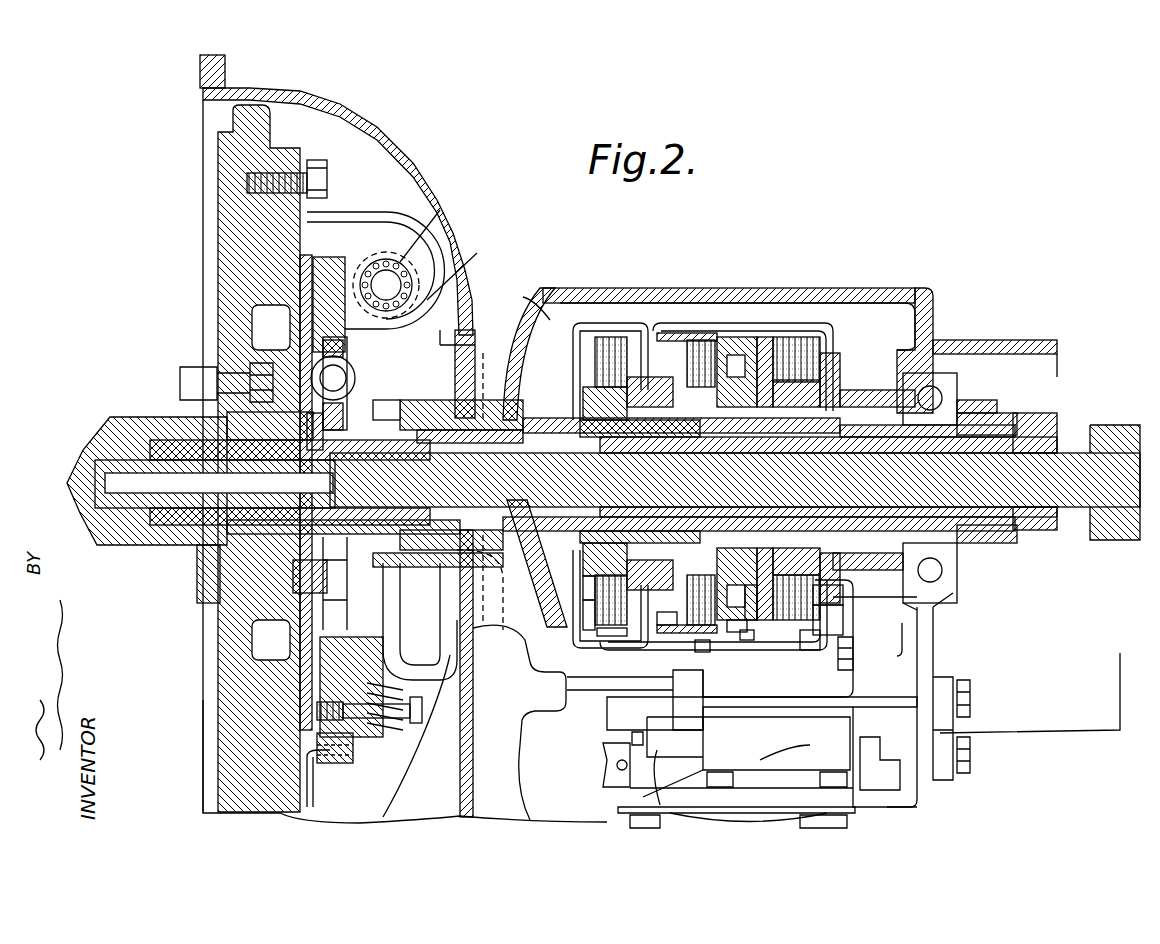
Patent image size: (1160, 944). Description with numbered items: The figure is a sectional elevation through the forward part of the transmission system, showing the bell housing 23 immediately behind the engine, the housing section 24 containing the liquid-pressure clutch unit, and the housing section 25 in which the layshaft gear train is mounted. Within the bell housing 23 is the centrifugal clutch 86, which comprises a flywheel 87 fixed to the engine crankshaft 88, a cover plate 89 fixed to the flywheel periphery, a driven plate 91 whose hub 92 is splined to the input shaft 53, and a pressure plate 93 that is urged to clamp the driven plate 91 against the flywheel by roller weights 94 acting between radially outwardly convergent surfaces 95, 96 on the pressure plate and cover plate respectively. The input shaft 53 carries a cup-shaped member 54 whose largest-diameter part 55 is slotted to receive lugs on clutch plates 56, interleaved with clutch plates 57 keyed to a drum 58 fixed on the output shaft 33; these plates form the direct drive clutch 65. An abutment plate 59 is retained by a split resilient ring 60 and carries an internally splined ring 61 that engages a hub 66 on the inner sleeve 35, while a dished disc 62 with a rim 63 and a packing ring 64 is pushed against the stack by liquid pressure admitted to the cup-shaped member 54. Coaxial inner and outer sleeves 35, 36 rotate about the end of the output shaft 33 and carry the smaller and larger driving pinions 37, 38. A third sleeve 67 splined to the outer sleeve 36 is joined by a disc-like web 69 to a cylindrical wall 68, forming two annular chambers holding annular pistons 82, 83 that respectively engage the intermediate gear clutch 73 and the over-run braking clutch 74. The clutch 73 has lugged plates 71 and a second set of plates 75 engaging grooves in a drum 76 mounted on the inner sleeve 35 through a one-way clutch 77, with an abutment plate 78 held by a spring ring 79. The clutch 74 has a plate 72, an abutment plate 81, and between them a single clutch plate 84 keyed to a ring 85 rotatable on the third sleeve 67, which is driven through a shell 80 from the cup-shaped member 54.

The bell housing 23 is at (418, 172).
The housing section 24 is at (870, 293).
The housing section 25 is at (1047, 343).
The output shaft 33 is at (1077, 460).
The inner sleeve 35 is at (982, 440).
The outer sleeve 36 is at (933, 433).
The smaller driving pinion 37 is at (1050, 538).
The larger driving pinion 38 is at (982, 407).
The input shaft 53 is at (430, 445).
The cup-shaped member 54 is at (537, 367).
The largest-diameter part 55 is at (583, 627).
The clutch plates 56 is at (613, 580).
The clutch plates 57 is at (550, 627).
The drum 58 is at (547, 603).
The abutment plate 59 is at (630, 353).
The split resilient ring 60 is at (655, 360).
The ring 61 is at (657, 387).
The dished disc 62 is at (523, 407).
The rim 63 is at (580, 295).
The packing ring 64 is at (547, 325).
The direct drive clutch 65 is at (620, 317).
The hub 66 is at (640, 403).
The third sleeve 67 is at (847, 413).
The cylindrical wall 68 is at (770, 340).
The disc-like web 69 is at (757, 590).
The clutch plates 71 is at (733, 628).
The clutch plate 72 is at (853, 657).
The intermediate gear clutch 73 is at (703, 650).
The over-run braking clutch 74 is at (851, 638).
The second set of plates 75 is at (700, 347).
The drum 76 is at (617, 420).
The one-way clutch 77 is at (617, 543).
The abutment plate 78 is at (680, 347).
The spring ring 79 is at (667, 613).
The shell 80 is at (820, 327).
The abutment plate 81 is at (827, 620).
The annular piston 82 is at (747, 633).
The annular piston 83 is at (800, 653).
The clutch plate 84 is at (813, 597).
The ring 85 is at (843, 407).
The centrifugal clutch 86 is at (192, 740).
The flywheel 87 is at (227, 753).
The engine crankshaft 88 is at (140, 420).
The cover plate 89 is at (380, 213).
The driven plate 91 is at (300, 690).
The hub 92 is at (210, 563).
The pressure plate 93 is at (327, 240).
The roller weights 94 is at (657, 292).
The convergent surface 95 is at (353, 253).
The convergent surface 96 is at (567, 290).